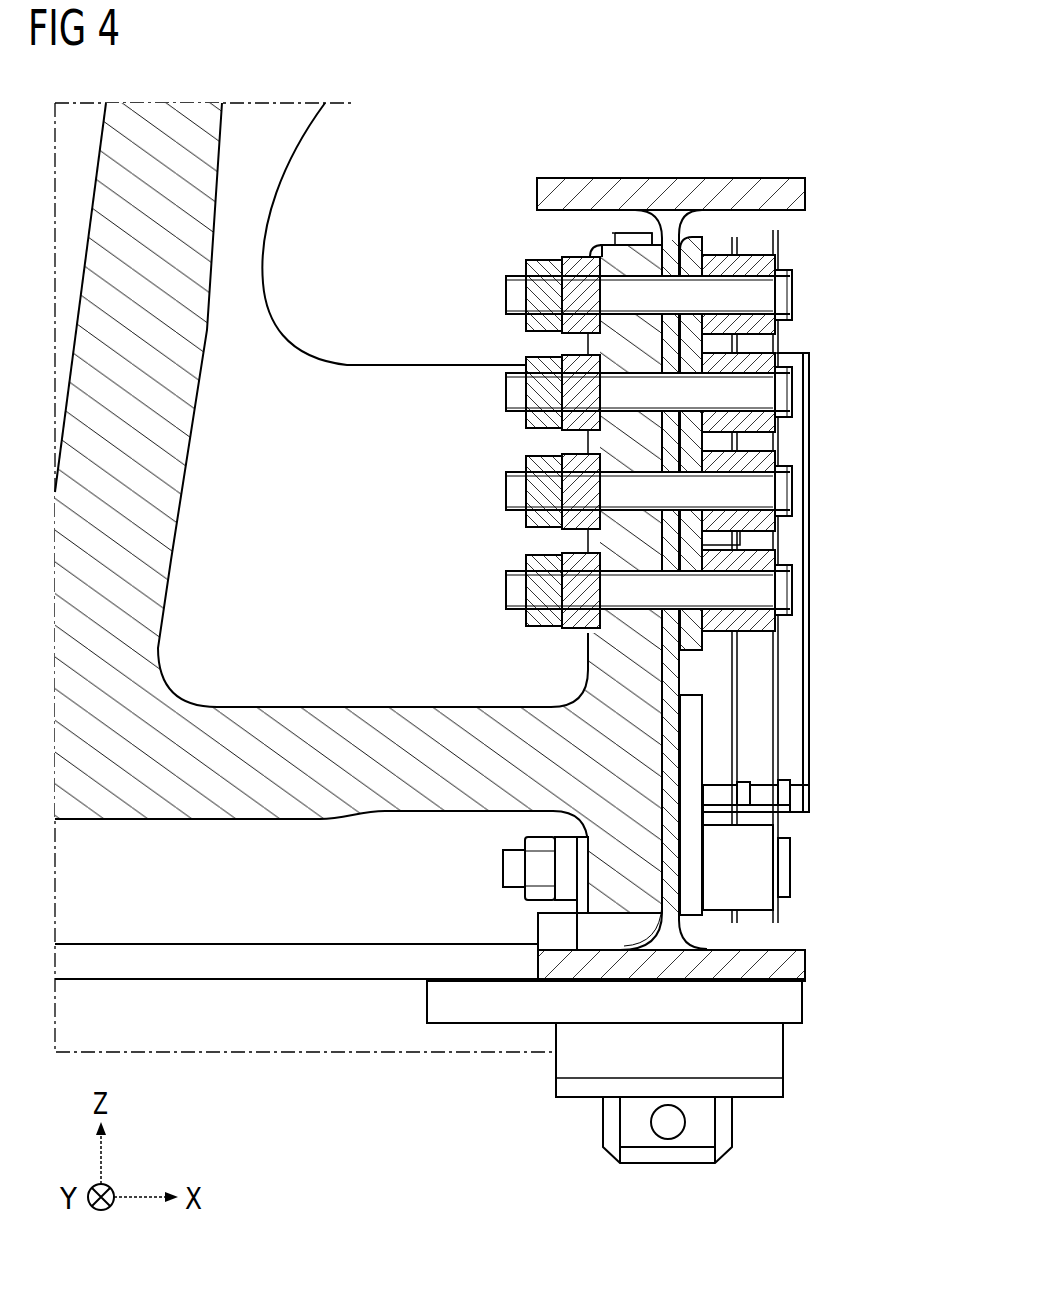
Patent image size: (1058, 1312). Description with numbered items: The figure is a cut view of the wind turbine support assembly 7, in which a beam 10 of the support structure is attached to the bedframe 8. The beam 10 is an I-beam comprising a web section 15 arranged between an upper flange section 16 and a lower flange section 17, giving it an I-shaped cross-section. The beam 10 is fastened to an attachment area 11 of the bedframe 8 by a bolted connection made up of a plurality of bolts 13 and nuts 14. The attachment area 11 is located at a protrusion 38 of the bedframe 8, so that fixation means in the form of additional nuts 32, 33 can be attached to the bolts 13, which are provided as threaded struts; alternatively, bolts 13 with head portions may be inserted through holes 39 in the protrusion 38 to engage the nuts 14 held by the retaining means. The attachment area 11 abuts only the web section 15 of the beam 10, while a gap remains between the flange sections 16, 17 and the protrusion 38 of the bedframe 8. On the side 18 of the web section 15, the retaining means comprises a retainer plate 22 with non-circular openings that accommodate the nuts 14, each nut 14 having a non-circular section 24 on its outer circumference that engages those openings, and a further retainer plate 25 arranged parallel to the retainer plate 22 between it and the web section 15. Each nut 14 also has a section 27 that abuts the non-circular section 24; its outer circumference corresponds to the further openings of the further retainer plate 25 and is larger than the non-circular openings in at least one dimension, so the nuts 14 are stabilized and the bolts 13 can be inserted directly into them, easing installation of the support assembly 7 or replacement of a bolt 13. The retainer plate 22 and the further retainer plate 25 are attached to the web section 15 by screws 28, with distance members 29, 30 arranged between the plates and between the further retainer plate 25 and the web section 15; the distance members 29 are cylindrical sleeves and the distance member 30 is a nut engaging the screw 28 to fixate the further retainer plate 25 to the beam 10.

The support assembly 7 is at (856, 117).
The bedframe 8 is at (180, 130).
The beam 10 is at (705, 560).
The attachment area 11 is at (660, 262).
The bolt 13 is at (765, 287).
The nut 14 is at (763, 255).
The web section 15 is at (670, 250).
The upper flange section 16 is at (785, 185).
The lower flange section 17 is at (760, 967).
The side of the web section 18 is at (683, 437).
The retainer plate 22 is at (780, 550).
The non-circular section 24 is at (777, 360).
The further retainer plate 25 is at (735, 540).
The section of the nut 27 is at (760, 350).
The screw 28 is at (787, 797).
The distance member 29 is at (750, 780).
The distance member 30 is at (740, 795).
The additional nut 32 is at (532, 270).
The additional nut 33 is at (580, 265).
The protrusion 38 is at (715, 795).
The hole 39 is at (645, 252).